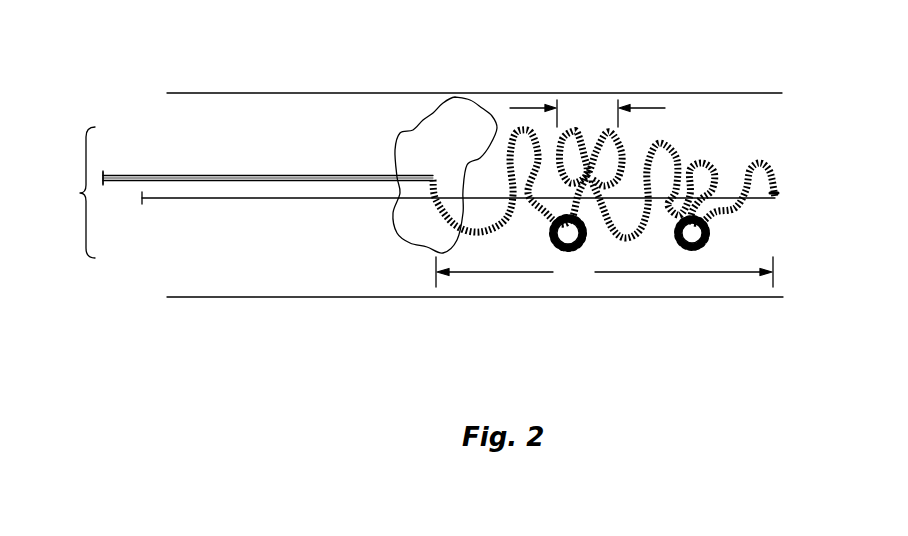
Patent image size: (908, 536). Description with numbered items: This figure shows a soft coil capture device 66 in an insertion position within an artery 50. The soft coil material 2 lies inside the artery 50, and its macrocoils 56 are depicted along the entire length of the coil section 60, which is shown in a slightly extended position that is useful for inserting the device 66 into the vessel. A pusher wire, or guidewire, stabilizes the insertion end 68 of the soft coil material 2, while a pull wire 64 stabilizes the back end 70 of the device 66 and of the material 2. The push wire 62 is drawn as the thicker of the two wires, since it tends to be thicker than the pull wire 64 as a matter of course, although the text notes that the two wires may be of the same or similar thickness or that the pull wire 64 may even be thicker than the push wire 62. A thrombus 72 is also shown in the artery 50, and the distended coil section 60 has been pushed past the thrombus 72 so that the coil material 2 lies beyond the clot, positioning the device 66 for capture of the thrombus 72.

The soft coil material 2 is at (722, 154).
The artery 50 is at (652, 93).
The macrocoils 56 is at (587, 110).
The coil section 60 is at (604, 272).
The push wire 62 is at (312, 210).
The pull wire 64 is at (266, 176).
The device 66 is at (69, 192).
The insertion end 68 is at (794, 186).
The back end 70 is at (140, 168).
The thrombus 72 is at (465, 110).